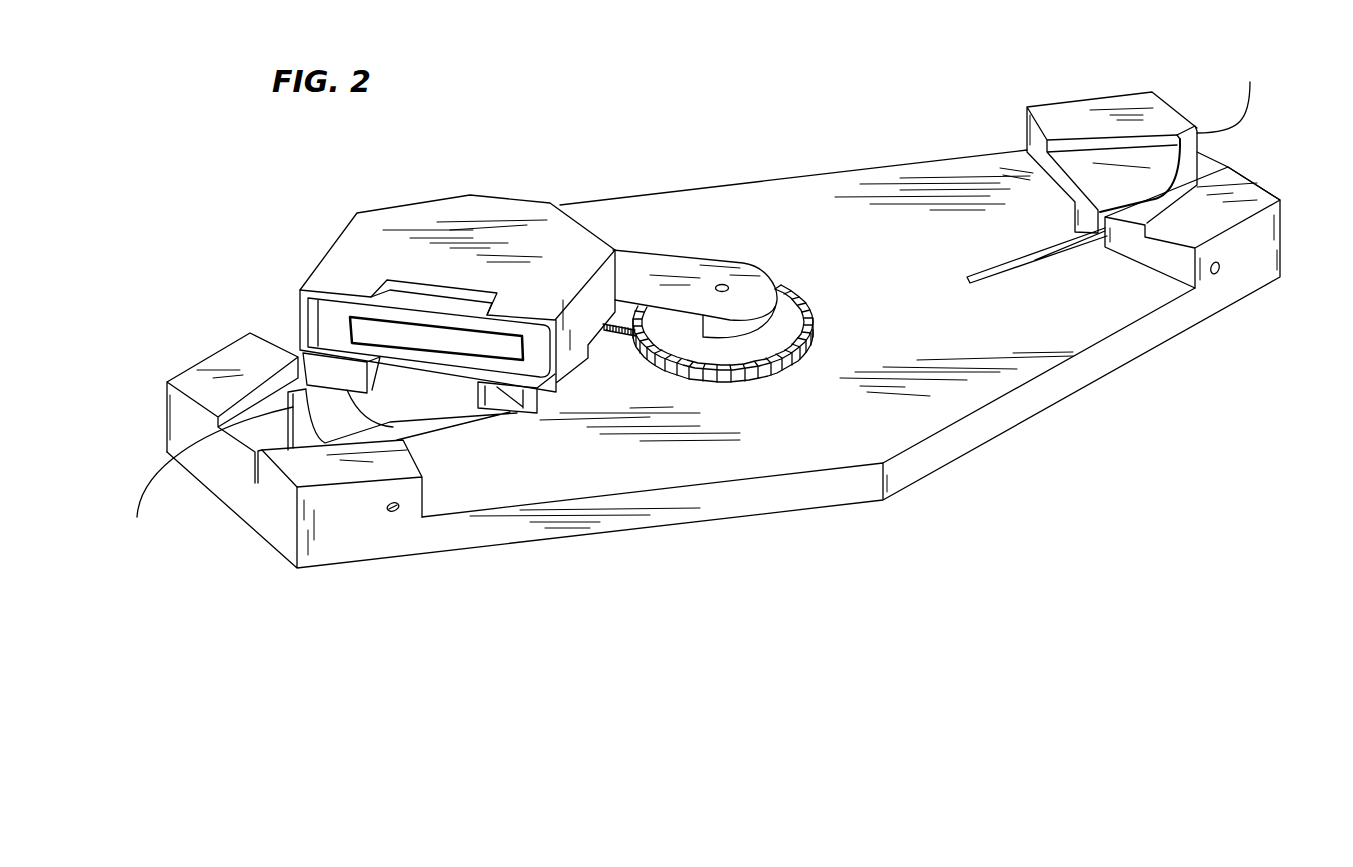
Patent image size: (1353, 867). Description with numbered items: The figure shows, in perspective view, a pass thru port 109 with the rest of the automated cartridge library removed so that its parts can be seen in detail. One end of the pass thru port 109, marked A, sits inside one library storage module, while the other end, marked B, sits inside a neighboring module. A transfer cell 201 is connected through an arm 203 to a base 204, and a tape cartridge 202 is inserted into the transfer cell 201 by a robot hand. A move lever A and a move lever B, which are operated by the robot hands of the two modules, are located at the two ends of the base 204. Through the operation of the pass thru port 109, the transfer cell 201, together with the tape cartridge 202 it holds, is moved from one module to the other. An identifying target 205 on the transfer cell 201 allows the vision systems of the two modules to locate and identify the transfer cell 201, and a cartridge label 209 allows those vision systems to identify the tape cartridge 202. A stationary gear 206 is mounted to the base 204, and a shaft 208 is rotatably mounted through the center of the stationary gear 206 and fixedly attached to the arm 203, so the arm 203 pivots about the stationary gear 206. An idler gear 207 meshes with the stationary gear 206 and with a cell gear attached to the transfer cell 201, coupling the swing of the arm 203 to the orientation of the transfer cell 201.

The pass thru port 109 is at (669, 99).
The transfer cell 201 is at (473, 207).
The tape cartridge 202 is at (417, 302).
The arm 203 is at (661, 268).
The base 204 is at (800, 187).
The identifying target 205 is at (528, 413).
The stationary gear 206 is at (813, 302).
The idler gear 207 is at (617, 345).
The shaft 208 is at (723, 285).
The cartridge label 209 is at (435, 340).